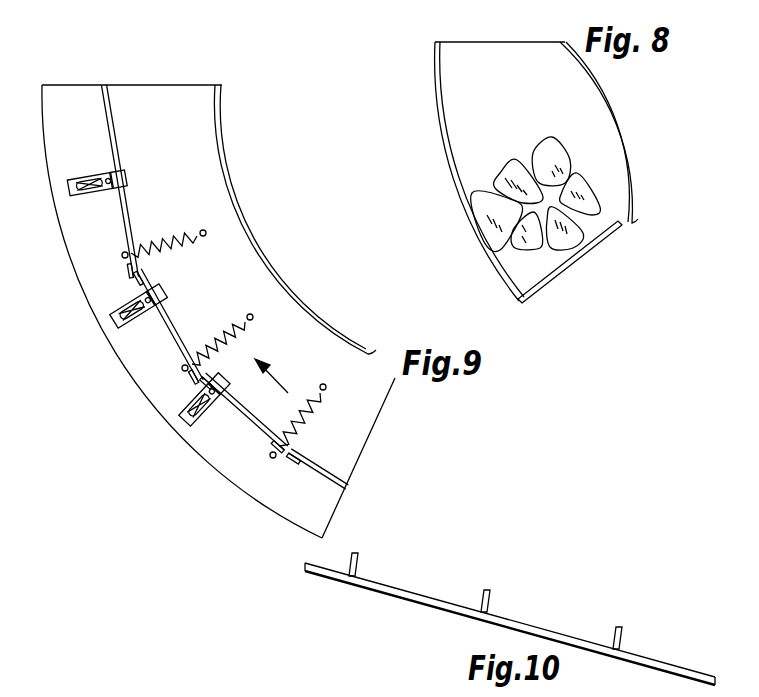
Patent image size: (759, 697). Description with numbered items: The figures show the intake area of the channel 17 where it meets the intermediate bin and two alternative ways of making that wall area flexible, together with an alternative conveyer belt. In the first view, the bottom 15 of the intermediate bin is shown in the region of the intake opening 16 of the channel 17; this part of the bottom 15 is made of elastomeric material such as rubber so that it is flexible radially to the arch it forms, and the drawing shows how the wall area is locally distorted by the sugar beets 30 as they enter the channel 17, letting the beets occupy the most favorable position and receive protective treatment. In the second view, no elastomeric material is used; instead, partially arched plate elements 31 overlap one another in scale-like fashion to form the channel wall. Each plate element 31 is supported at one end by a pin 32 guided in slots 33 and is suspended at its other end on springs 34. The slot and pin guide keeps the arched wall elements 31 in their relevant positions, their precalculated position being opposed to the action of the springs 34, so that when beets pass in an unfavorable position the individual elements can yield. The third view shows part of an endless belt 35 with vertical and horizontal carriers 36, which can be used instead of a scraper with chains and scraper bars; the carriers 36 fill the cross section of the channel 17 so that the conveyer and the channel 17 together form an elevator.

In FIG. 9, the bottom 15 is at (120, 220).
In FIG. 8, the bottom 15 is at (438, 118).
In FIG. 8, the intake opening 16 is at (552, 280).
In FIG. 8, the channel 17 is at (436, 69).
In FIG. 8, the sugar beets 30 is at (553, 152).
In FIG. 9, the plate elements 31 is at (172, 345).
In FIG. 9, the pin 32 is at (192, 420).
In FIG. 9, the slots 33 is at (108, 309).
In FIG. 9, the springs 34 is at (168, 240).
In FIG. 10, the endless belt 35 is at (550, 637).
In FIG. 10, the carriers 36 is at (488, 591).